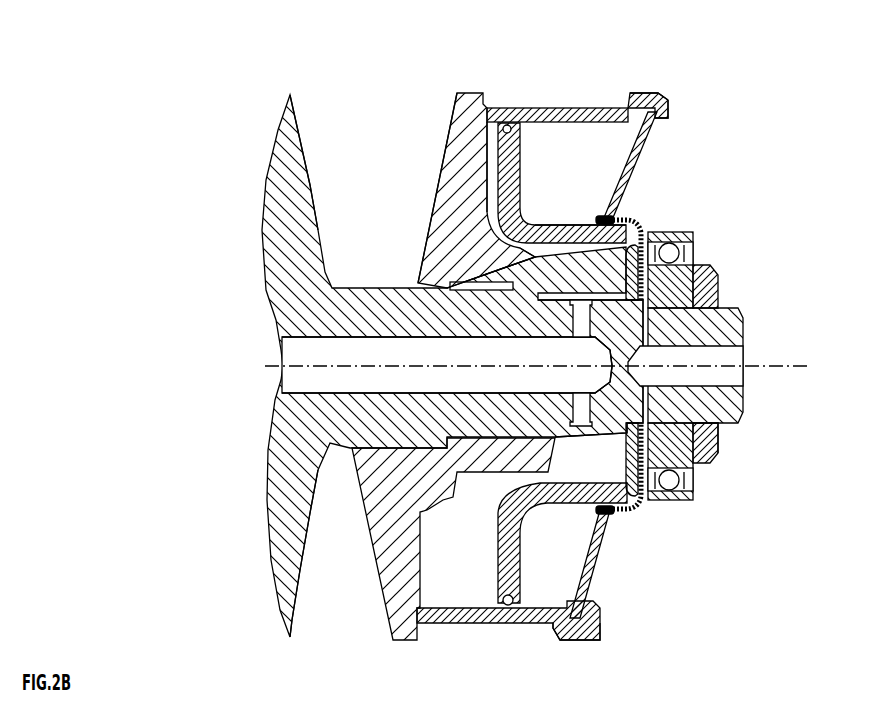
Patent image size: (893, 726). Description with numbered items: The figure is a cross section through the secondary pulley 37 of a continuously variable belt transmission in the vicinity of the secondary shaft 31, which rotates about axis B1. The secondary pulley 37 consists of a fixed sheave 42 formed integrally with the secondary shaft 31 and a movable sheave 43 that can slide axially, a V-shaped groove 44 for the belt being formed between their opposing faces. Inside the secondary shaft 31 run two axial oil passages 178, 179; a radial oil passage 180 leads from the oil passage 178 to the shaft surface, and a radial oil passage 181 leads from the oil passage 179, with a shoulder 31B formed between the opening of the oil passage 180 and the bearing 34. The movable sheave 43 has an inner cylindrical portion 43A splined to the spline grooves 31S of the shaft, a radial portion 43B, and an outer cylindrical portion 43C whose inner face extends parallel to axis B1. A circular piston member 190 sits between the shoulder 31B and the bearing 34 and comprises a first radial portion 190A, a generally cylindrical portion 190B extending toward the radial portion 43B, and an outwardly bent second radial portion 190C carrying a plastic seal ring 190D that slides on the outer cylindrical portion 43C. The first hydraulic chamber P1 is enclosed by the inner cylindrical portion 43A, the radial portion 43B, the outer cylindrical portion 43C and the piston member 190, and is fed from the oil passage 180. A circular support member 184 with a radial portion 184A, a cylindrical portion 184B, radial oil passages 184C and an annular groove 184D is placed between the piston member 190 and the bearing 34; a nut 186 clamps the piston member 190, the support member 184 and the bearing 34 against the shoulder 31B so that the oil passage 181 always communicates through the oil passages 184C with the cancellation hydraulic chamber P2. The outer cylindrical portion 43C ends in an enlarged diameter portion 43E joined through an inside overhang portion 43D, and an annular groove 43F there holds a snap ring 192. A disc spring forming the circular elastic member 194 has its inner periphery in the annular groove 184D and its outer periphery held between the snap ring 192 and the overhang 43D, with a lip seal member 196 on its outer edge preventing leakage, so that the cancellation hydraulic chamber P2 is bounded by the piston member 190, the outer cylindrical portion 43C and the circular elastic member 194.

The secondary pulley 37 is at (265, 108).
The V-shaped groove 44 is at (368, 138).
The fixed sheave 42 is at (290, 612).
The movable sheave 43 is at (450, 96).
The inner cylindrical portion 43A is at (530, 258).
The radial portion 43B is at (438, 199).
The outer cylindrical portion 43C is at (595, 107).
The inside overhang portion 43D is at (590, 606).
The enlarged diameter portion 43E is at (585, 643).
The annular groove 43F is at (648, 94).
The piston member 190 is at (533, 325).
The first radial portion 190A is at (632, 224).
The generally cylindrical portion 190B is at (570, 226).
The second radial portion 190C is at (490, 160).
The seal ring 190D is at (505, 122).
The seal member 196 is at (631, 100).
The snap ring 192 is at (670, 114).
The circular elastic member 194 is at (645, 140).
The circular support member 184 is at (671, 363).
The radial portion 184A is at (650, 224).
The cylindrical portion 184B is at (648, 512).
The oil passages 184C is at (628, 446).
The annular groove 184D is at (604, 214).
The bearing 34 is at (702, 246).
The secondary shaft 31 is at (716, 364).
The shoulder 31B is at (603, 392).
The spline grooves 31S is at (452, 285).
The oil passage 178 is at (286, 380).
The oil passage 179 is at (736, 385).
The oil passage 180 is at (582, 322).
The oil passage 181 is at (715, 424).
The nut 186 is at (716, 458).
The axis B1 is at (790, 365).
The first hydraulic chamber P1 is at (459, 540).
The cancellation hydraulic chamber P2 is at (557, 548).